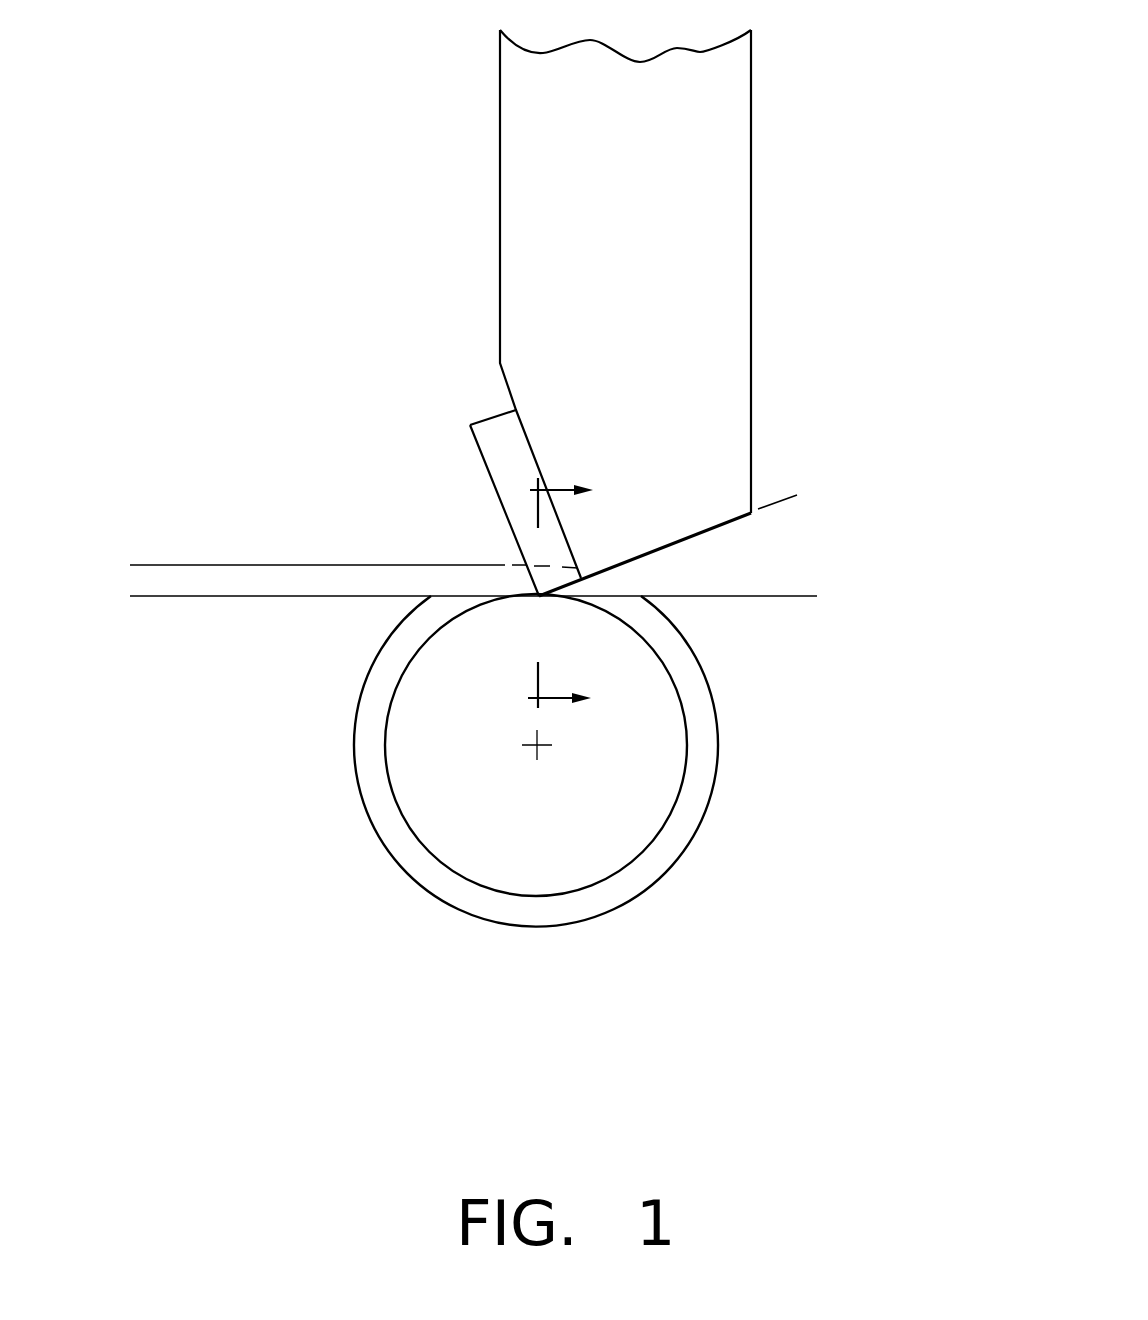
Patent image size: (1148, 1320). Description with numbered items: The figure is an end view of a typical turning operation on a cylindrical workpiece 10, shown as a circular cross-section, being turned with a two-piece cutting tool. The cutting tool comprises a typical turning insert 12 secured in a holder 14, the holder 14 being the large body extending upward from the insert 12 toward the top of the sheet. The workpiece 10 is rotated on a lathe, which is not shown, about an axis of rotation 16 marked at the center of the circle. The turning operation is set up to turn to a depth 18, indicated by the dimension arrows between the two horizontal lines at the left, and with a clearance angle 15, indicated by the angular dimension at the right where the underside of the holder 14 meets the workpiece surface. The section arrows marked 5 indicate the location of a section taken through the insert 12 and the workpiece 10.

The cylindrical workpiece 10 is at (657, 742).
The turning insert 12 is at (507, 474).
The holder 14 is at (640, 280).
The clearance angle 15 is at (795, 510).
The axis of rotation 16 is at (537, 750).
The depth 18 is at (141, 500).
The section line for FIG. 5 is at (579, 597).